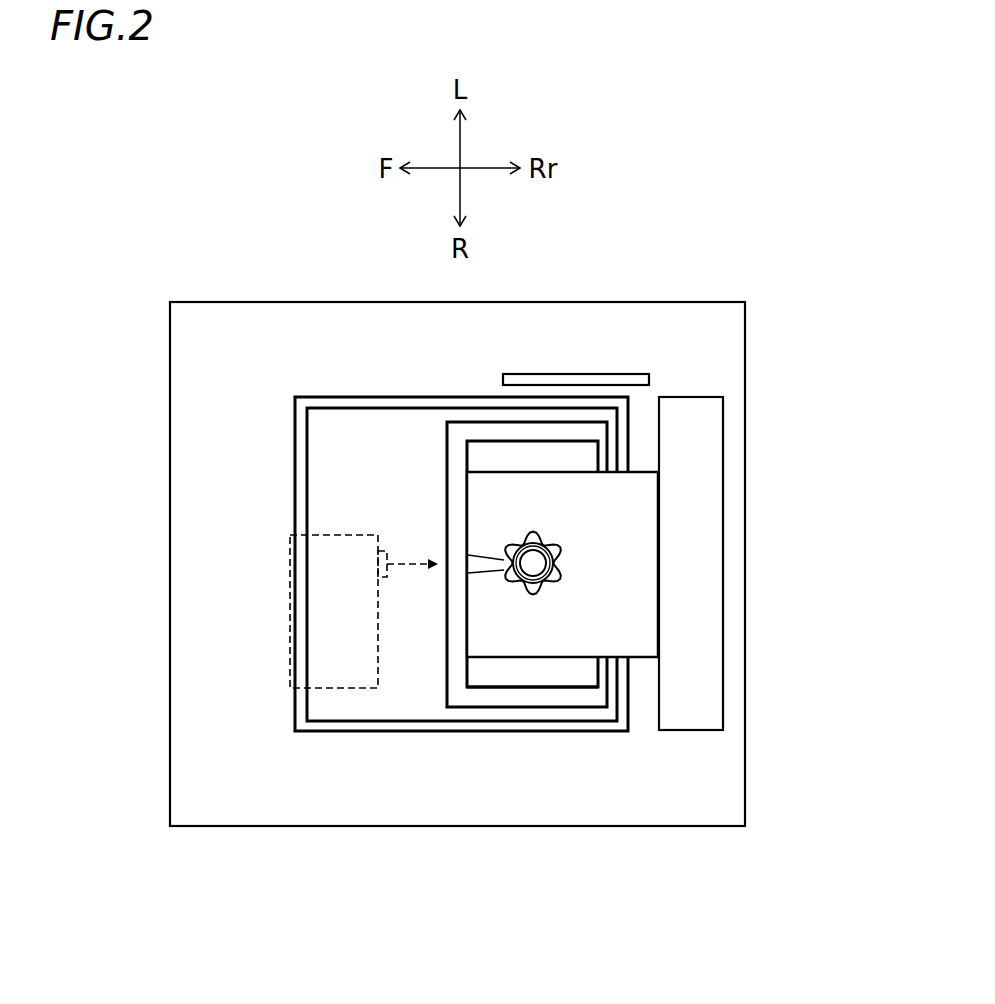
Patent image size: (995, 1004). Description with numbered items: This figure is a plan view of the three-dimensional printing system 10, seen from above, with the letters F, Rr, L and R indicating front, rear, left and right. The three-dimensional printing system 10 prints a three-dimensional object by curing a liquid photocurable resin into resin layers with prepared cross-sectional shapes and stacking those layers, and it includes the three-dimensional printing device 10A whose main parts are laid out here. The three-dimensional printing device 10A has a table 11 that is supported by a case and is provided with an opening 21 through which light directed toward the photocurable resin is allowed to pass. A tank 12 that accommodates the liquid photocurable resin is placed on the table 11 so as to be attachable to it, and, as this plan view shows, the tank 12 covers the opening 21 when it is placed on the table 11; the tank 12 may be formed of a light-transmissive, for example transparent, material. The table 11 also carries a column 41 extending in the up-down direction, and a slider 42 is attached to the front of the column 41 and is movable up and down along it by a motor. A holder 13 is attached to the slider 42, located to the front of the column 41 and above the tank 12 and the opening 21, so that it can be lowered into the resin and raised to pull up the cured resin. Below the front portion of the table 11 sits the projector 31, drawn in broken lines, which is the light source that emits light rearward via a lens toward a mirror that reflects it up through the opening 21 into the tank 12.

The three-dimensional printing system 10 is at (740, 205).
The three-dimensional printing device 10A is at (327, 845).
The table 11 is at (625, 302).
The tank 12 is at (330, 397).
The holder 13 is at (522, 688).
The opening 21 is at (447, 482).
The projector 31 is at (290, 575).
The column 41 is at (723, 463).
The slider 42 is at (536, 472).